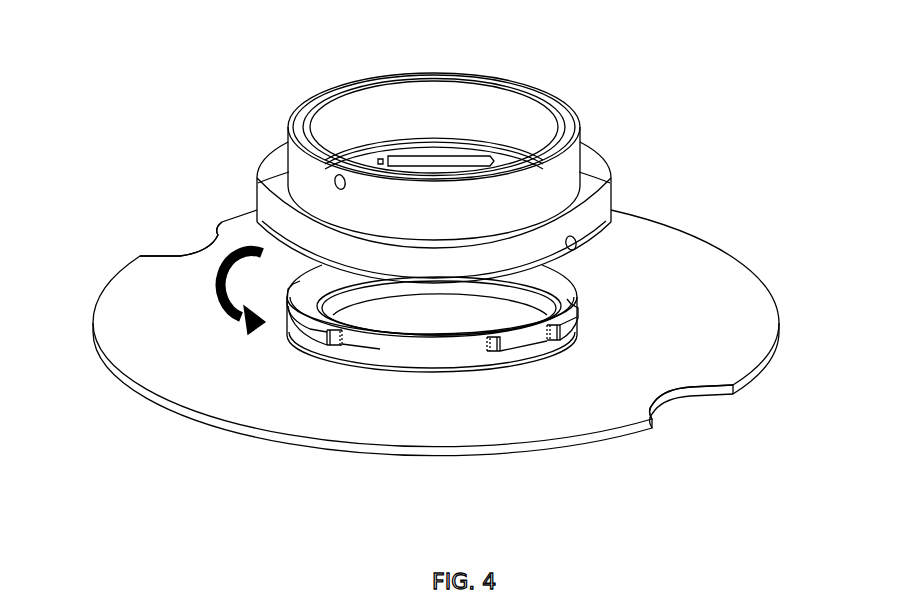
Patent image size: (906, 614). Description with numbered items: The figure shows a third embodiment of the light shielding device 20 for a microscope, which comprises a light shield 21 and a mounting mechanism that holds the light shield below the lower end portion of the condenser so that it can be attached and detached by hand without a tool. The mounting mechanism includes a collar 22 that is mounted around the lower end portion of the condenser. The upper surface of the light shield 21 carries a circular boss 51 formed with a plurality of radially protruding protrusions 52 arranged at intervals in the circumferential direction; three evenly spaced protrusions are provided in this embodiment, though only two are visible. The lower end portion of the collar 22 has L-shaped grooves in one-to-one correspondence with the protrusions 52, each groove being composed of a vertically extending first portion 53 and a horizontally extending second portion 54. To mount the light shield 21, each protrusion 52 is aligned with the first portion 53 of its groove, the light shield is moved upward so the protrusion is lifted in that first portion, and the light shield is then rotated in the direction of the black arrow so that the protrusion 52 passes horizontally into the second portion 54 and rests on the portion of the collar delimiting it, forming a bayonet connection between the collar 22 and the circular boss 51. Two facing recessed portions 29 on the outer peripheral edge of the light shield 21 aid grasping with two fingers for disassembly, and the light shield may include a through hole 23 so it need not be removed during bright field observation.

The light shielding device 20 is at (581, 50).
The light shield 21 is at (672, 272).
The collar 22 is at (557, 172).
The through hole 23 is at (380, 386).
The recessed portion 29 is at (210, 245).
The circular boss 51 is at (427, 354).
The protrusion 52 is at (563, 323).
The first portion 53 is at (368, 162).
The second portion 54 is at (405, 154).